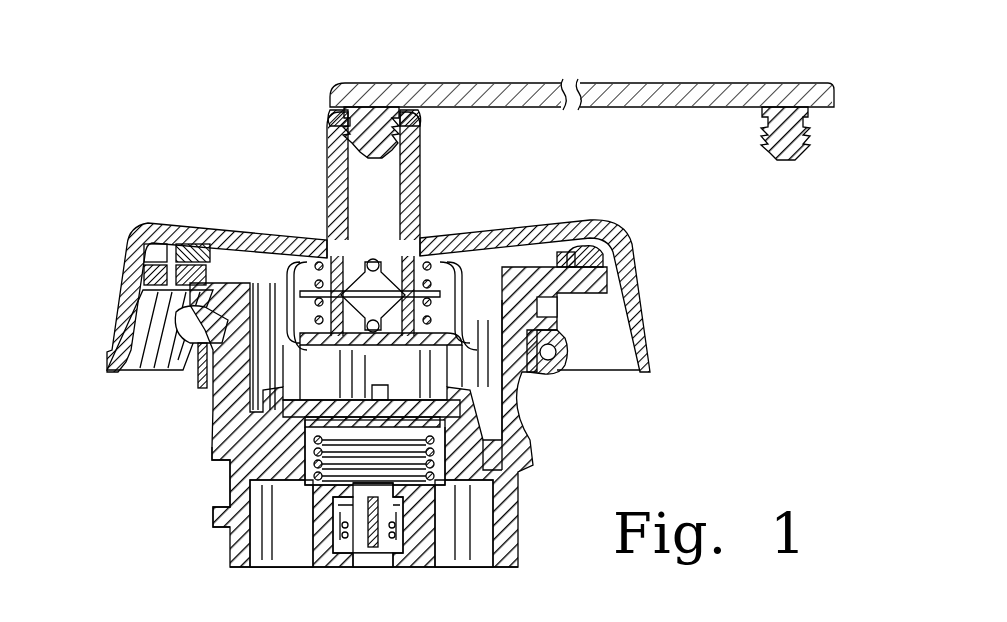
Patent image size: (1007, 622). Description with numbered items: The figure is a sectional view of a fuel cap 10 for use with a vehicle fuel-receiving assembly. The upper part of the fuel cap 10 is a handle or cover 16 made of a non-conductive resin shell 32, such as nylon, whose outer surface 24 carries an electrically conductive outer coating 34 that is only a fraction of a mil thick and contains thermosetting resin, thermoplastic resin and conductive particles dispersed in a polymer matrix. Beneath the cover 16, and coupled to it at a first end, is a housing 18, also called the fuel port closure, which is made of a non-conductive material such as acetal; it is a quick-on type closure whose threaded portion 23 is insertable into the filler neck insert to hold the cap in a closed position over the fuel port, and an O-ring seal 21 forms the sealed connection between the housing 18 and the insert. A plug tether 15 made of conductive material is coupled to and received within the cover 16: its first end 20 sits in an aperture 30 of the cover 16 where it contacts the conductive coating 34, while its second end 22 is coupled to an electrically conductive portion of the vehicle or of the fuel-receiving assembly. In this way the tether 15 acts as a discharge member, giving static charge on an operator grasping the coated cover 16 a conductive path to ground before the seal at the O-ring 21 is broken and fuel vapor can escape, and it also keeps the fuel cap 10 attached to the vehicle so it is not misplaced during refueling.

The fuel cap 10 is at (140, 88).
The tether 15 is at (680, 64).
The cover 16 is at (622, 223).
The housing 18 is at (533, 394).
The first end 20 is at (368, 92).
The O-ring seal 21 is at (578, 344).
The second end 22 is at (800, 150).
The threaded portion 23 is at (211, 452).
The outer surface 24 is at (574, 230).
The aperture 30 is at (330, 95).
The resin shell 32 is at (421, 188).
The electrically conductive outer coating 34 is at (421, 122).